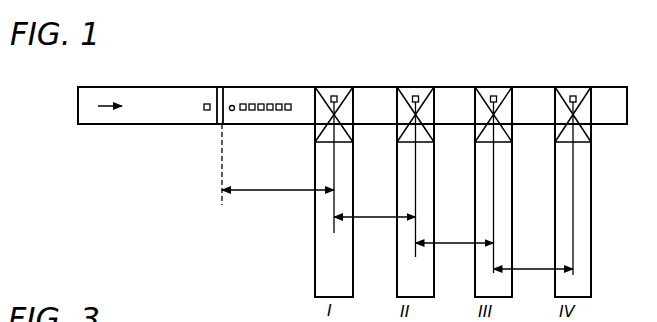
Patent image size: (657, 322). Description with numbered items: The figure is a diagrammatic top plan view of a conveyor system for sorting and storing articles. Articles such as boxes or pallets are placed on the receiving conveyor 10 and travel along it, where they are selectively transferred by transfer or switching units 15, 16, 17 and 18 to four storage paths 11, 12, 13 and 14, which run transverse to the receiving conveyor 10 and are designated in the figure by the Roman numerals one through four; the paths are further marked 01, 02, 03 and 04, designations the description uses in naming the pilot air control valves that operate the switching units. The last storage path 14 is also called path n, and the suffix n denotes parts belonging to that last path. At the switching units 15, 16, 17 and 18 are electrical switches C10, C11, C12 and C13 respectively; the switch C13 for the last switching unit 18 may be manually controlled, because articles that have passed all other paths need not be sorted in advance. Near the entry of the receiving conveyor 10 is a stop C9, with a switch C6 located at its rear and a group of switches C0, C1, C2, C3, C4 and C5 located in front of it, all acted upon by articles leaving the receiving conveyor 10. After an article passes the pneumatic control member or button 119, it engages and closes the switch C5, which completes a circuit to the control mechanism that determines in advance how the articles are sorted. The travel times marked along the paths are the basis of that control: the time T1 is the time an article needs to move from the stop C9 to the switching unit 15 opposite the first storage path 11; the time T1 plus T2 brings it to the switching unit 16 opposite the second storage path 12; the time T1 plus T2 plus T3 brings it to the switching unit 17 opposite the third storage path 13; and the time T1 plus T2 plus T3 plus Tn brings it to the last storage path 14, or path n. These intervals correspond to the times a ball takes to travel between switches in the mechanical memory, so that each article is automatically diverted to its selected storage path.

The receiving conveyor 10 is at (154, 85).
The pneumatic control member or button 119 is at (232, 104).
The stop C9 is at (220, 94).
The switch C6 is at (204, 110).
The switch C5 is at (243, 110).
The switch C4 is at (252, 103).
The switch C3 is at (260, 110).
The switch C2 is at (271, 103).
The switch C1 is at (279, 110).
The switch C0 is at (292, 105).
The electrical switch C10 is at (344, 87).
The electrical switch C11 is at (413, 87).
The electrical switch C12 is at (492, 87).
The electrical switch C13 is at (570, 87).
The storage path 11 is at (350, 184).
The storage path 12 is at (432, 184).
The storage path 13 is at (511, 184).
The storage path 14 is at (592, 184).
The transfer or switching unit 15 is at (350, 120).
The transfer or switching unit 16 is at (432, 121).
The transfer or switching unit 17 is at (509, 119).
The transfer or switching unit 18 is at (592, 119).
The last storage path designation n is at (591, 248).
The time interval T1 is at (278, 179).
The time interval T2 is at (375, 229).
The time interval T3 is at (455, 256).
The time interval Tn is at (534, 282).
The output 01 is at (334, 286).
The output 02 is at (413, 286).
The output 03 is at (493, 286).
The output 04 is at (572, 286).